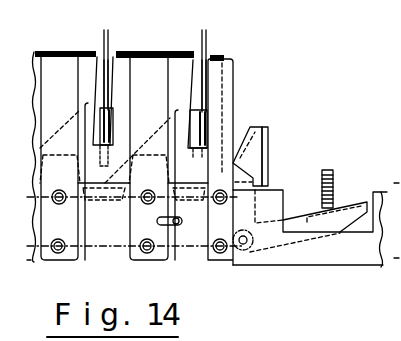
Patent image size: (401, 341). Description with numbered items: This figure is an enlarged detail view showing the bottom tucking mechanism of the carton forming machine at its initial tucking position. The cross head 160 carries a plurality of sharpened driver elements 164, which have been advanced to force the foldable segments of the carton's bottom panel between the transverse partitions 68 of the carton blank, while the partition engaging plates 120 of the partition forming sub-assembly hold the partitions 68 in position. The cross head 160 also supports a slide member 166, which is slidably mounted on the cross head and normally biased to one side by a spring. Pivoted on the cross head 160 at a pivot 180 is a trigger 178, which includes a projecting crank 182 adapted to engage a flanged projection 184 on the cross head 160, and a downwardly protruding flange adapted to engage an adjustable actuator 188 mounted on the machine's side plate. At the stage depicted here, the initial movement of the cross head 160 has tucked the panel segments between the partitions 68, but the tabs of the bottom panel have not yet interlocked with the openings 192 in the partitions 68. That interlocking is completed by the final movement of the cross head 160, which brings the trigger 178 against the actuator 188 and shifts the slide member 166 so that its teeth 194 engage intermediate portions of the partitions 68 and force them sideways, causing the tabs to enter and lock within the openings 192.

The partition engaging plate 120 is at (200, 43).
The sharpened driver element 164 is at (66, 68).
The slide member 166 is at (101, 249).
The opening 192 is at (109, 88).
The tooth 194 is at (172, 118).
The partition 68 is at (190, 121).
The projecting crank 182 is at (251, 127).
The flanged projection 184 is at (267, 133).
The adjustable actuator 188 is at (323, 186).
The trigger 178 is at (343, 202).
The pivot 180 is at (245, 248).
The cross head member 160 is at (340, 248).